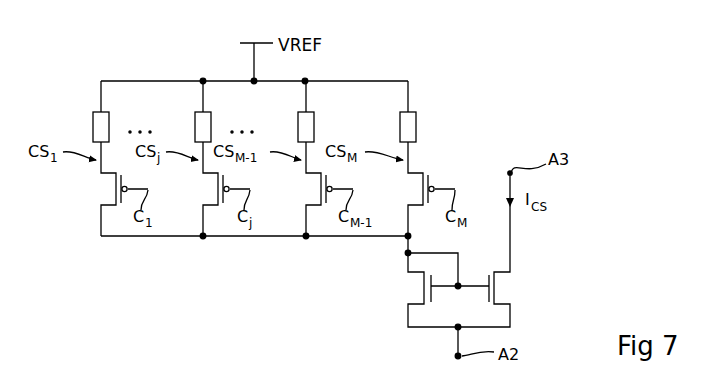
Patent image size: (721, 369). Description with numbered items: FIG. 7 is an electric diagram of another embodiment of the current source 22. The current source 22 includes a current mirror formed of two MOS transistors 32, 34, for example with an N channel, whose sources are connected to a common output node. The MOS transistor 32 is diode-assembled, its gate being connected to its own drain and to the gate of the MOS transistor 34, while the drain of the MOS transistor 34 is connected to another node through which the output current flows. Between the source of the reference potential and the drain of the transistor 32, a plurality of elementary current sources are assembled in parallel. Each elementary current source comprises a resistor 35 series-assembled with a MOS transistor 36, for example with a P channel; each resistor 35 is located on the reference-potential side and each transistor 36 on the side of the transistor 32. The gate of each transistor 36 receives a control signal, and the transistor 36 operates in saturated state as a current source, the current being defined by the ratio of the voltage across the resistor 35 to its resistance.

The current source 22 is at (510, 103).
The MOS transistor 32 is at (420, 302).
The MOS transistor 34 is at (497, 302).
The resistor 35 is at (400, 127).
The MOS transistor 36 is at (408, 204).